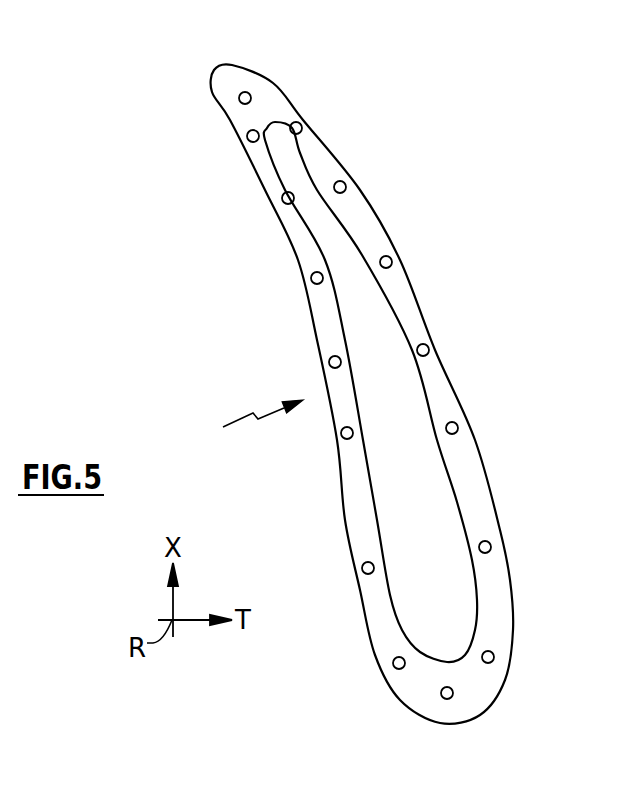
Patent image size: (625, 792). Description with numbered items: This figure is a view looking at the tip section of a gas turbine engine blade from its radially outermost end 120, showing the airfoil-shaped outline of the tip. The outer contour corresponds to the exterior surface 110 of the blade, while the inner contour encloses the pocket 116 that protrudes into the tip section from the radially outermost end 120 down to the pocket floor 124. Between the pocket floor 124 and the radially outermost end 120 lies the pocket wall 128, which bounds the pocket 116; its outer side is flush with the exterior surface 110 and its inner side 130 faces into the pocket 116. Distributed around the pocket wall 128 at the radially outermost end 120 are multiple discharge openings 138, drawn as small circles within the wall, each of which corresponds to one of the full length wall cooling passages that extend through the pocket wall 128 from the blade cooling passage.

The exterior surface 110 is at (463, 413).
The pocket 116 is at (440, 511).
The radially outermost end 120 is at (240, 422).
The pocket floor 124 is at (395, 550).
The pocket wall 128 is at (463, 467).
The inner side 130 is at (455, 506).
The discharge openings 138 is at (398, 657).